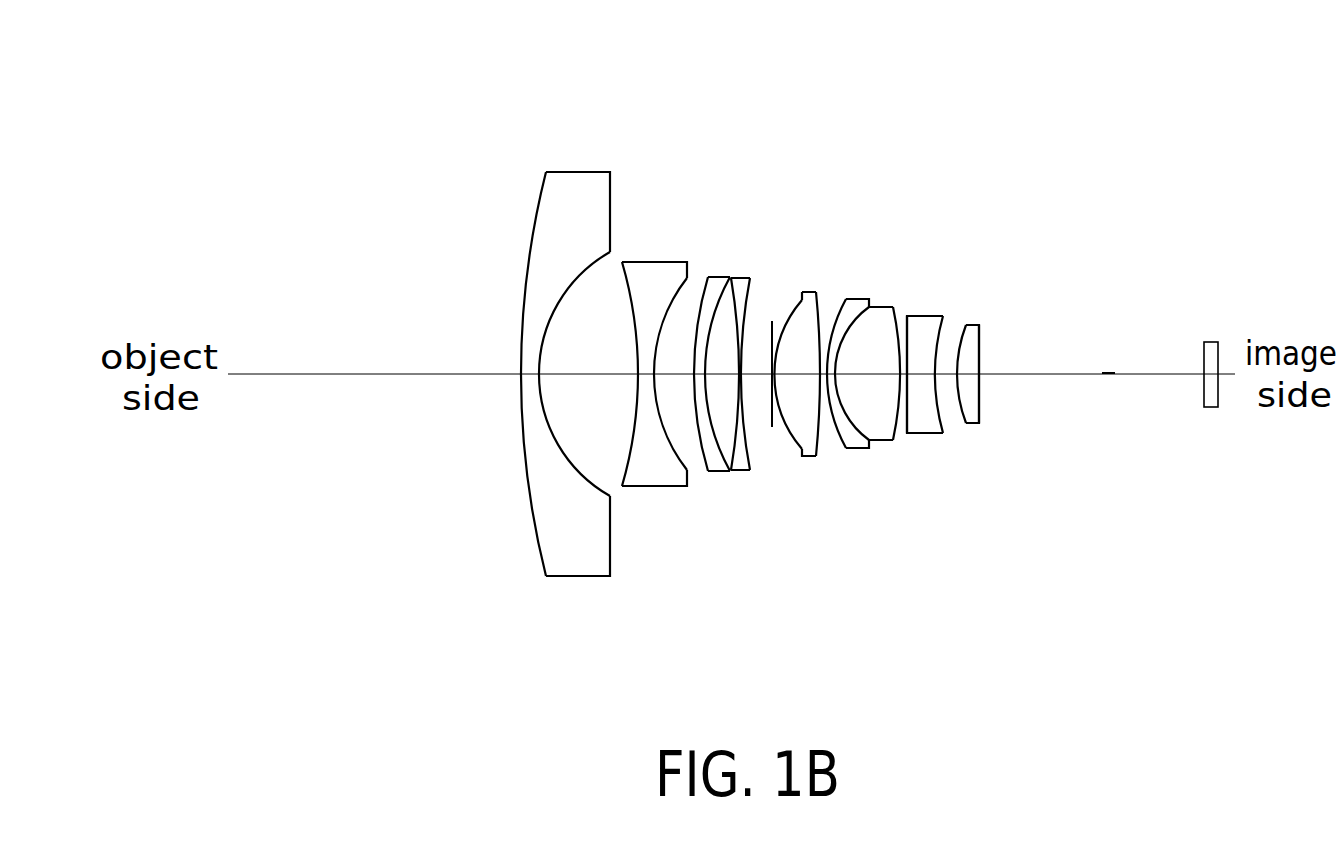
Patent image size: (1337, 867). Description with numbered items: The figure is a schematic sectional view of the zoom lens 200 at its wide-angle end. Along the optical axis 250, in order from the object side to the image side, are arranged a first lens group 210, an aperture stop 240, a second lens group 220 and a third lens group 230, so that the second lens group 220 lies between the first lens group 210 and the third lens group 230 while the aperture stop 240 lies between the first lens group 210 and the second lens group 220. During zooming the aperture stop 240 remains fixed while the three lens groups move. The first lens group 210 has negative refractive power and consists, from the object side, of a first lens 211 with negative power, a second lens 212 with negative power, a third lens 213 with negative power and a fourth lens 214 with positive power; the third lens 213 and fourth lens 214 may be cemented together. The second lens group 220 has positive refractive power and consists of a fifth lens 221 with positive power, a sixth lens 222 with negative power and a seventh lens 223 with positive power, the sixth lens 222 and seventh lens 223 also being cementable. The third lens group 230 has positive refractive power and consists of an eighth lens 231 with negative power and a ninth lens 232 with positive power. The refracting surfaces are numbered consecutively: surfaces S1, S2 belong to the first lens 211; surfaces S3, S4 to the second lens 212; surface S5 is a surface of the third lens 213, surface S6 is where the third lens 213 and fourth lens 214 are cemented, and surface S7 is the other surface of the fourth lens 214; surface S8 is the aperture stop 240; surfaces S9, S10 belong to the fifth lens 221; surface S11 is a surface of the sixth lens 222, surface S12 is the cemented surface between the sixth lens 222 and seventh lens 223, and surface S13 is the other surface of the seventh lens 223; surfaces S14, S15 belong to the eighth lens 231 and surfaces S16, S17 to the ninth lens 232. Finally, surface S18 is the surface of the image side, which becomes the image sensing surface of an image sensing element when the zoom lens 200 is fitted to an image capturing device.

The zoom lens 200 is at (1208, 649).
The first lens group 210 is at (762, 76).
The first lens 211 is at (561, 399).
The second lens 212 is at (642, 394).
The third lens 213 is at (708, 362).
The fourth lens 214 is at (751, 357).
The second lens group 220 is at (933, 183).
The fifth lens 221 is at (808, 378).
The sixth lens 222 is at (862, 411).
The seventh lens 223 is at (902, 379).
The third lens group 230 is at (1043, 218).
The eighth lens 231 is at (969, 366).
The ninth lens 232 is at (1010, 383).
The aperture stop 240 is at (771, 318).
The optical axis 250 is at (384, 372).
The surface of first lens S1 is at (533, 531).
The surface of first lens S2 is at (580, 461).
The surface of second lens S3 is at (624, 467).
The surface of second lens S4 is at (682, 449).
The surface of third lens S5 is at (701, 463).
The cemented surface of third and fourth lenses S6 is at (729, 454).
The surface of fourth lens S7 is at (749, 440).
The aperture stop surface S8 is at (797, 447).
The surface of fifth lens S9 is at (818, 444).
The surface of fifth lens S10 is at (840, 434).
The surface of sixth lens S11 is at (853, 424).
The cemented surface of sixth and seventh lenses S12 is at (897, 414).
The surface of seventh lens S13 is at (938, 409).
The surface of eighth lens S14 is at (905, 363).
The surface of eighth lens S15 is at (980, 417).
The surface of ninth lens S16 is at (956, 377).
The surface of ninth lens S17 is at (981, 408).
The image side surface S18 is at (1203, 360).